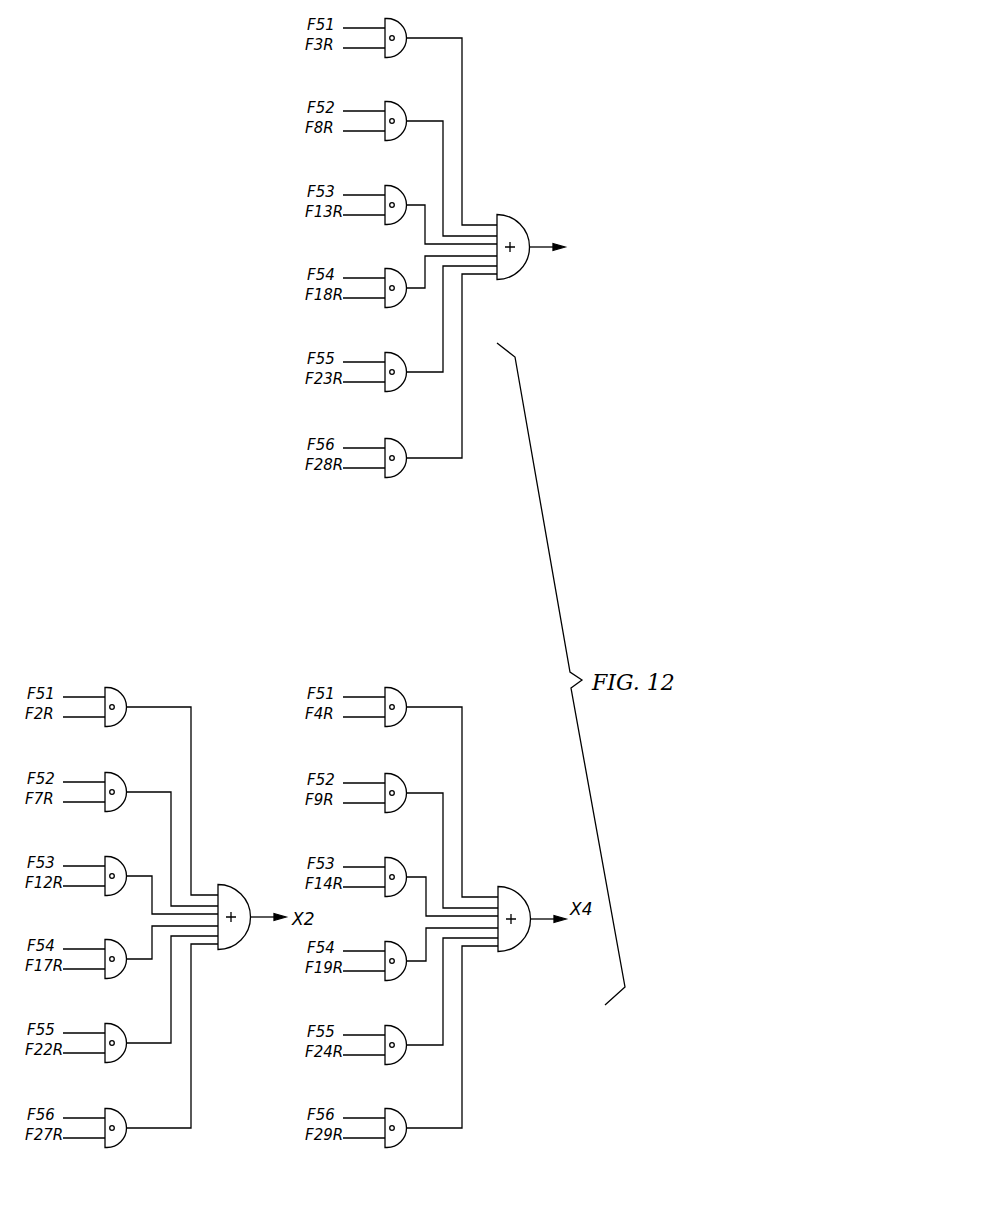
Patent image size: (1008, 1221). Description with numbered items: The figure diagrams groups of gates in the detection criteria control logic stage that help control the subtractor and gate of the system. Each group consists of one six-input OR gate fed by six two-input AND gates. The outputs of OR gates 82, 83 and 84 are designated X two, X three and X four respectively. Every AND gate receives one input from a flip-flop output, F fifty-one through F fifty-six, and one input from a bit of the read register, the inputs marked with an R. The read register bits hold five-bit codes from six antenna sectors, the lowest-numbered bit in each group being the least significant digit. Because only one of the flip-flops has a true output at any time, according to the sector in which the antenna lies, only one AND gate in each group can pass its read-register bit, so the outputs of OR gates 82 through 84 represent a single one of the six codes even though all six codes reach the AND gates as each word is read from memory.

The OR gate 82 is at (236, 895).
The OR gate 83 is at (516, 228).
The OR gate 84 is at (517, 898).